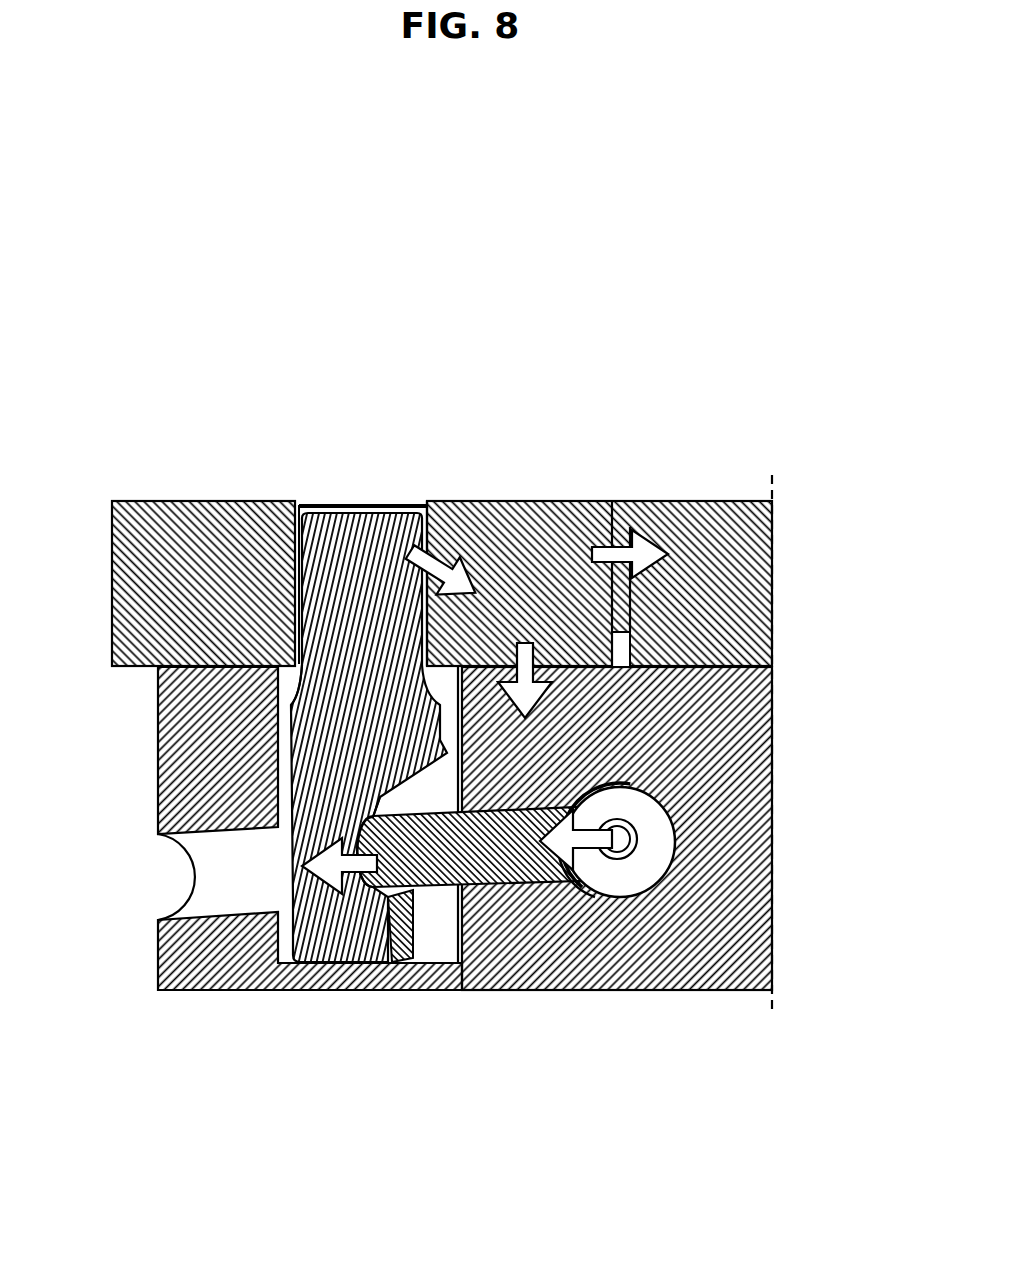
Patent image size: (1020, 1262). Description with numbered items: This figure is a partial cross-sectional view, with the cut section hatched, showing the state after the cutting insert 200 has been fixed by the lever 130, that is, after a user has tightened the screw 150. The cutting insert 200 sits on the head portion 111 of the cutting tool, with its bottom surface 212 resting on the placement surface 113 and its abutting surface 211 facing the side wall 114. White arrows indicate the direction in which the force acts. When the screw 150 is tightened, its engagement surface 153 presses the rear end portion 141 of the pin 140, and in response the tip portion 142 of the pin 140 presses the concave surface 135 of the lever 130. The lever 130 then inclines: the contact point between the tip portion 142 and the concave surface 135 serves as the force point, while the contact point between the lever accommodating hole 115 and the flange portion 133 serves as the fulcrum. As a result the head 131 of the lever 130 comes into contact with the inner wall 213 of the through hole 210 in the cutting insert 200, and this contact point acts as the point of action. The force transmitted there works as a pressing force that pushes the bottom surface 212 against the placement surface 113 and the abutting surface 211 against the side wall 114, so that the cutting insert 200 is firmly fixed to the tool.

The head portion 111 is at (140, 312).
The placement surface 113 is at (615, 665).
The side wall 114 is at (612, 527).
The lever accommodating hole 115 is at (288, 942).
The lever 130 is at (317, 790).
The head 131 is at (365, 560).
The flange portion 133 is at (285, 712).
The concave surface 135 is at (345, 880).
The pin 140 is at (477, 860).
The rear end portion 141 is at (590, 860).
The tip portion 142 is at (393, 897).
The screw 150 is at (645, 772).
The engagement surface 153 is at (625, 873).
The cutting insert 200 is at (500, 515).
The through hole 210 is at (307, 511).
The abutting surface 211 is at (614, 530).
The bottom surface 212 is at (575, 667).
The inner wall 213 is at (430, 515).